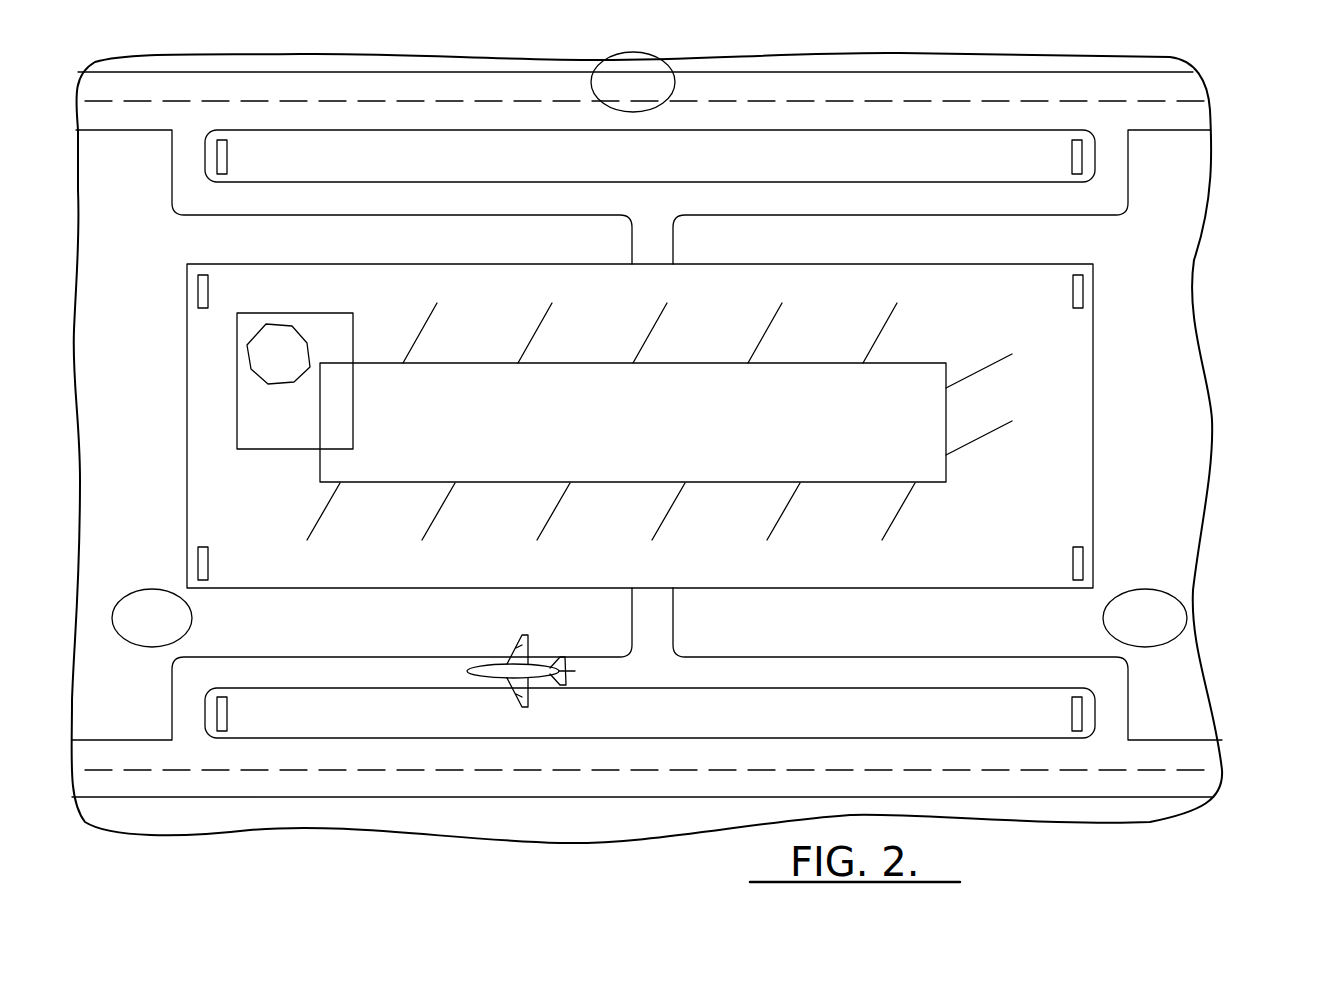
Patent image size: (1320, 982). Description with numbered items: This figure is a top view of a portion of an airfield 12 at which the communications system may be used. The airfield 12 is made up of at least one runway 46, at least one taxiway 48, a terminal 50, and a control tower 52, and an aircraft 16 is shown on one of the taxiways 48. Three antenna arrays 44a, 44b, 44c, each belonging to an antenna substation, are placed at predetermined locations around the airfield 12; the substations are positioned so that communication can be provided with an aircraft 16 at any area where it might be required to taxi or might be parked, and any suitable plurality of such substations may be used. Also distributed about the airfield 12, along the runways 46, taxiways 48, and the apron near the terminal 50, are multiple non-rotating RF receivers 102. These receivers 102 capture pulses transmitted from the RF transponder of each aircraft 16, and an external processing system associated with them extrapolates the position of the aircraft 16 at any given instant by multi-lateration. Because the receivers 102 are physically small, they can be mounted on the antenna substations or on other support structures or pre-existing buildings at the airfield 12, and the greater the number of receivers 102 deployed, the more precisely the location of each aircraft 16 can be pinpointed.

The airfield 12 is at (1234, 319).
The runway 46 is at (262, 92).
The taxiway 48 is at (200, 200).
The terminal 50 is at (533, 436).
The control tower 52 is at (274, 334).
The RF receiver 102 is at (227, 157).
The antenna array 44a is at (632, 110).
The antenna array 44b is at (118, 604).
The antenna array 44c is at (1178, 620).
The aircraft 16 is at (500, 668).